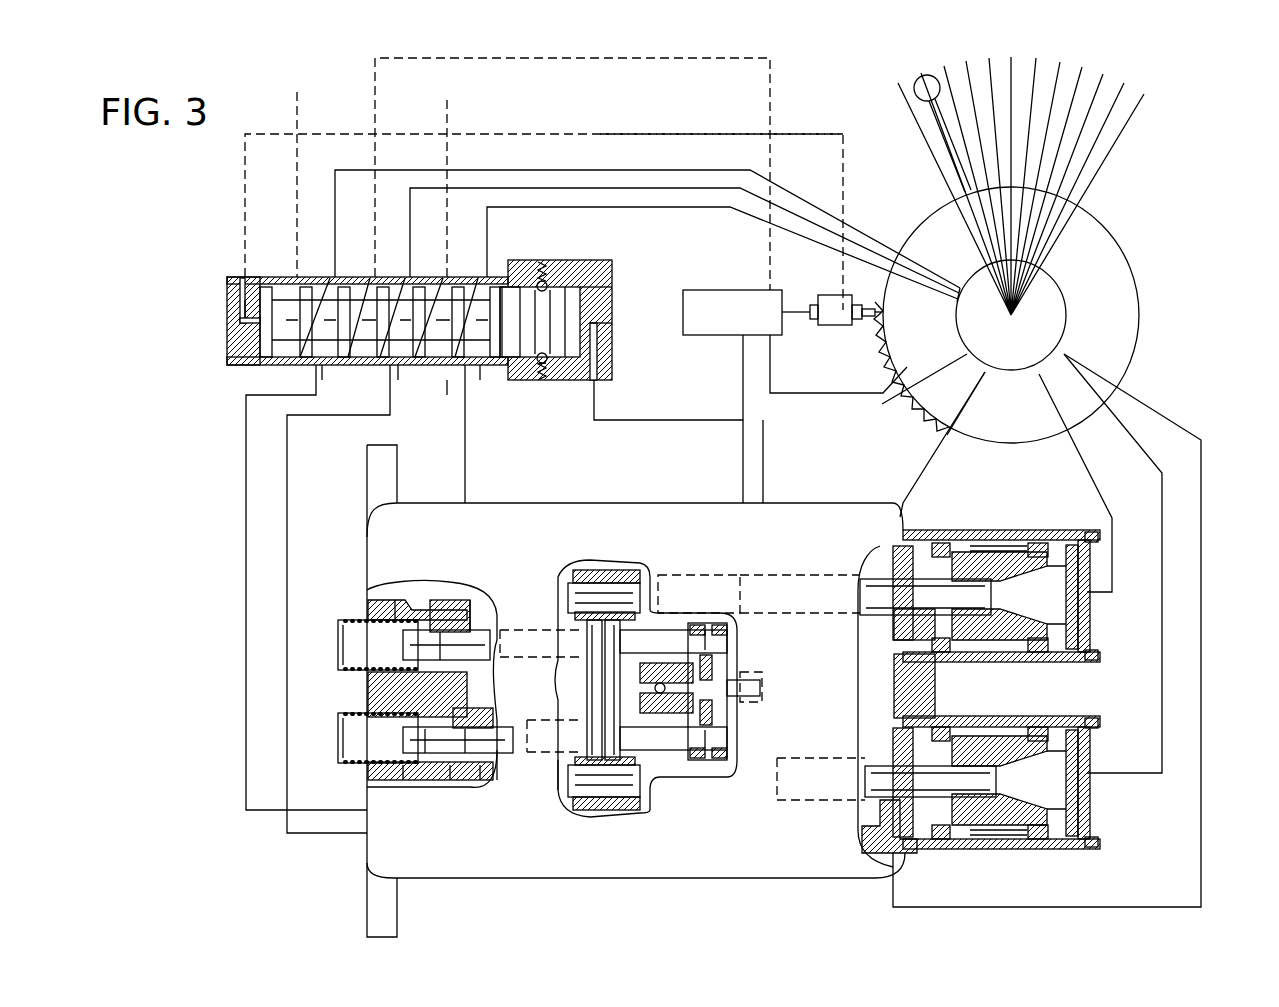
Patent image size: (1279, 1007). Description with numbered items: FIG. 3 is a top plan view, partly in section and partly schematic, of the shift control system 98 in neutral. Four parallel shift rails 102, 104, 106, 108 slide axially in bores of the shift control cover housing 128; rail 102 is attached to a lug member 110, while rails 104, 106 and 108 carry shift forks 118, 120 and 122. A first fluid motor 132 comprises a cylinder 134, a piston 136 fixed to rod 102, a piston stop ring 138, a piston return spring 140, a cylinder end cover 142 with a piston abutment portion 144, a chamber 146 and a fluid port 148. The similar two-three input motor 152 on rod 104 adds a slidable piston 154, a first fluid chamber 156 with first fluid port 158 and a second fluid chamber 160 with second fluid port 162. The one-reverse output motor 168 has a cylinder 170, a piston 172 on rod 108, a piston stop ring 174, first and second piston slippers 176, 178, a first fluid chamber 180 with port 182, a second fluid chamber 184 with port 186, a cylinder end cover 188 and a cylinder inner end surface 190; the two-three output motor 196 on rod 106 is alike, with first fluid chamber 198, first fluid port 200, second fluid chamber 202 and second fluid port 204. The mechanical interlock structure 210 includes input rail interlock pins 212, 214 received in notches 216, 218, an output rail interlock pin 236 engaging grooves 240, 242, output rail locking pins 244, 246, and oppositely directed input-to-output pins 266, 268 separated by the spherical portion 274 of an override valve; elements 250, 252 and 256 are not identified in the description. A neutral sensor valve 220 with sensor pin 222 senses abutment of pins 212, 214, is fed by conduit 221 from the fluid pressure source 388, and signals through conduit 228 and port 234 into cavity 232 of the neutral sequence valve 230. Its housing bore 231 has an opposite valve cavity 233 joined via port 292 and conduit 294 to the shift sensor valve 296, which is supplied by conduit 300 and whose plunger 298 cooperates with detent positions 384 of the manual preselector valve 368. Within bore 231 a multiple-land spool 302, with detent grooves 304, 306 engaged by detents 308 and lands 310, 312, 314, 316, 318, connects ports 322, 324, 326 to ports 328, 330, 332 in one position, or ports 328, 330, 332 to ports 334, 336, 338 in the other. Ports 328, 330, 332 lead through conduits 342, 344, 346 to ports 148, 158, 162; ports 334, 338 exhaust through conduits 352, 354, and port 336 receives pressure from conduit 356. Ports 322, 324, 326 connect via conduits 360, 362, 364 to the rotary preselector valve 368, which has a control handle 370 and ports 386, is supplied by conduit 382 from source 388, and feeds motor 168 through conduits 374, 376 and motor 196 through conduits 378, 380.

The shift control system 98 is at (715, 885).
The shift rail 102 is at (485, 630).
The shift rail 104 is at (490, 765).
The shift rail 106 is at (862, 583).
The shift rail 108 is at (870, 768).
The lug member 110 is at (545, 615).
The shift fork 118 is at (556, 790).
The shift fork 120 is at (705, 578).
The shift fork 122 is at (792, 807).
The shift control cover housing 128 is at (568, 503).
The first fluid motor 132 is at (400, 605).
The cylinder 134 is at (420, 600).
The piston 136 is at (420, 648).
The piston stop ring 138 is at (440, 665).
The piston return spring 140 is at (338, 625).
The cylinder end cover 142 is at (335, 645).
The piston abutment portion 144 is at (380, 603).
The chamber 146 is at (445, 610).
The fluid port 148 is at (470, 620).
The fluid motor 152 is at (405, 766).
The piston 154 is at (465, 760).
The first fluid chamber 156 is at (495, 710).
The first fluid port 158 is at (480, 780).
The second fluid chamber 160 is at (425, 755).
The second fluid port 162 is at (450, 770).
The fluid motor 168 is at (955, 849).
The cylinder 170 is at (1030, 530).
The piston 172 is at (985, 560).
The piston stop ring 174 is at (1000, 670).
The first piston slipper 176 is at (1037, 662).
The second piston slipper 178 is at (958, 668).
The first fluid chamber 180 is at (1040, 755).
The first fluid port 182 is at (1087, 775).
The second fluid chamber 184 is at (925, 718).
The second fluid port 186 is at (895, 840).
The cylinder end cover 188 is at (1092, 652).
The cylinder inner end surface 190 is at (895, 548).
The fluid motor 196 is at (970, 530).
The first fluid chamber 198 is at (1060, 615).
The first fluid port 200 is at (1087, 593).
The second fluid chamber 202 is at (920, 622).
The second fluid port 204 is at (905, 530).
The mechanical interlock structure 210 is at (655, 560).
The input rail interlock pin 212 is at (713, 665).
The input rail interlock pin 214 is at (730, 705).
The notch 216 is at (720, 645).
The notch 218 is at (720, 740).
The neutral sensor valve 220 is at (762, 692).
The conduit 221 is at (743, 468).
The sensor pin 222 is at (758, 686).
The conduit 228 is at (662, 420).
The neutral sequence valve 230 is at (218, 304).
The housing bore 231 is at (447, 386).
The cavity 232 is at (612, 285).
The valve cavity 233 is at (238, 278).
The port 234 is at (597, 330).
The output rail interlock pin 236 is at (540, 643).
The outer groove 240 is at (582, 578).
The outer groove 242 is at (590, 785).
The output rail locking pin 244 is at (620, 646).
The output rail locking pin 246 is at (620, 738).
The gear 250 is at (628, 570).
The gear 252 is at (645, 780).
The bevel pinion 256 is at (720, 712).
The input-to-output pin 266 is at (690, 663).
The input-to-output pin 268 is at (575, 672).
The spherical shaped portion 274 is at (688, 720).
The port 292 is at (283, 322).
The conduit 294 is at (682, 134).
The shift sensor valve 296 is at (832, 326).
The plunger 298 is at (870, 306).
The conduit 300 is at (798, 312).
The multiple-land spool 302 is at (262, 345).
The first detent groove 304 is at (578, 268).
The second detent groove 306 is at (517, 280).
The detents 308 is at (546, 281).
The land portion 310 is at (306, 287).
The land portion 312 is at (344, 287).
The land portion 314 is at (383, 287).
The land portion 316 is at (420, 287).
The land portion 318 is at (458, 287).
The port 322 is at (478, 278).
The port 324 is at (405, 278).
The port 326 is at (330, 278).
The port 328 is at (480, 370).
The port 330 is at (398, 370).
The port 332 is at (322, 370).
The port 334 is at (443, 278).
The port 336 is at (370, 278).
The port 338 is at (263, 284).
The conduit 342 is at (465, 436).
The conduit 344 is at (287, 436).
The conduit 346 is at (246, 436).
The exhaust conduit 352 is at (299, 96).
The exhaust conduit 354 is at (449, 97).
The pressure fluid conduit 356 is at (377, 96).
The conduit 360 is at (672, 207).
The conduit 362 is at (660, 188).
The conduit 364 is at (650, 170).
The manual preselector valve 368 is at (1112, 237).
The control handle 370 is at (917, 106).
The conduit 374 is at (1138, 448).
The conduit 376 is at (1197, 438).
The conduit 378 is at (1078, 458).
The conduit 380 is at (937, 436).
The conduit 382 is at (808, 394).
The detent positions 384 is at (895, 344).
The ports 386 is at (932, 270).
The fluid pressure source 388 is at (696, 336).